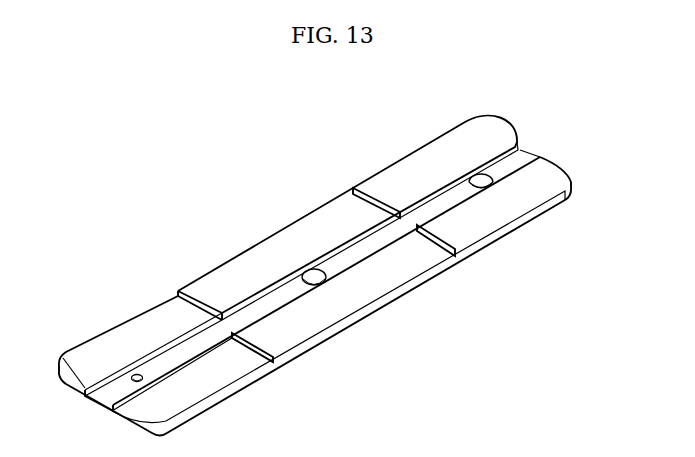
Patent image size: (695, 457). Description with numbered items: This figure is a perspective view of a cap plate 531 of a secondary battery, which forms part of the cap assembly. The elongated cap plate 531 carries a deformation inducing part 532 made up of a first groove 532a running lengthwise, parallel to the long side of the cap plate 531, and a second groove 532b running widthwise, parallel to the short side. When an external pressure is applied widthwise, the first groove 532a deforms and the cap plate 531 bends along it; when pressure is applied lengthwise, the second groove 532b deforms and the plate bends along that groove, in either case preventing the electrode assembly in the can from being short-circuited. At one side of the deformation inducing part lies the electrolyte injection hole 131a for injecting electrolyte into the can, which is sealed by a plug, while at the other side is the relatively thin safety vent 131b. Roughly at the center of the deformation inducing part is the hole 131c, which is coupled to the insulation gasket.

The cap plate 531 is at (571, 120).
The deformation inducing part 532 is at (312, 263).
The first groove 532a is at (243, 300).
The second groove 532b is at (153, 323).
The electrolyte injection hole 131a is at (137, 376).
The safety vent 131b is at (477, 178).
The hole 131c is at (312, 272).